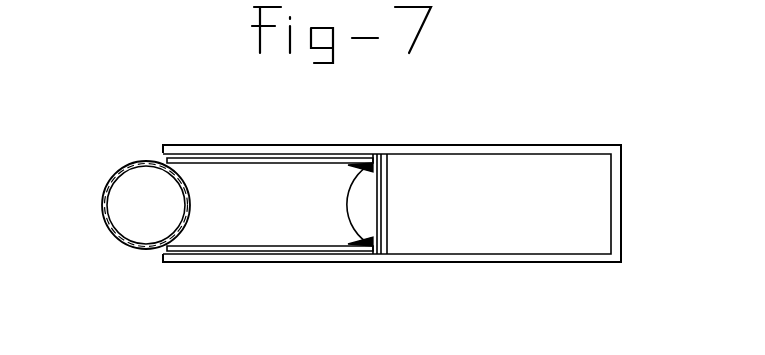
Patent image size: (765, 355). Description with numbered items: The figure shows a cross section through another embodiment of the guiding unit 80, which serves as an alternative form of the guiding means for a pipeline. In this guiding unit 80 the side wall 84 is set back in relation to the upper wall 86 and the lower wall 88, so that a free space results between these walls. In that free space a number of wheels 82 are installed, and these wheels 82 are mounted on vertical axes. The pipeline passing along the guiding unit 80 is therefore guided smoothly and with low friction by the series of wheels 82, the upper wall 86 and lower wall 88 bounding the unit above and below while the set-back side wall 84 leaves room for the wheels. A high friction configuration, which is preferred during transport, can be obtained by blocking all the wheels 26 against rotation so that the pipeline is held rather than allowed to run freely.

The wheels 26 is at (114, 190).
The guiding unit 80 is at (616, 201).
The wheels 82 is at (230, 230).
The side wall 84 is at (387, 230).
The upper wall 86 is at (322, 146).
The lower wall 88 is at (328, 260).